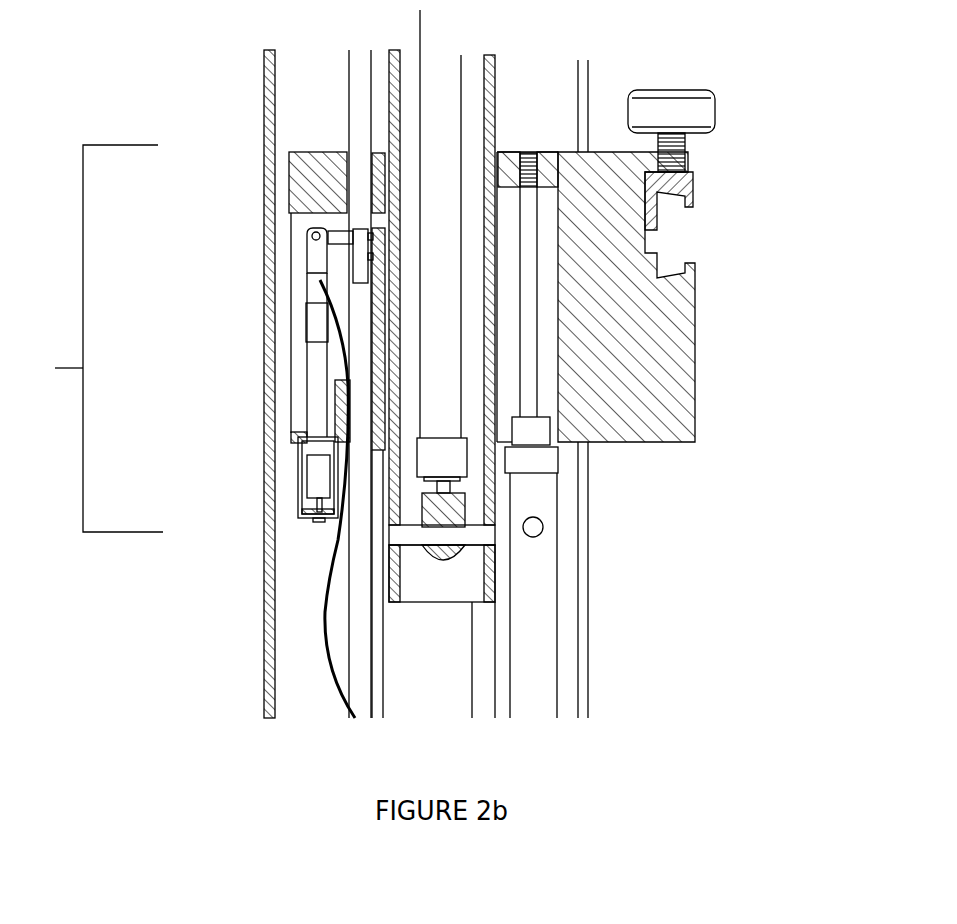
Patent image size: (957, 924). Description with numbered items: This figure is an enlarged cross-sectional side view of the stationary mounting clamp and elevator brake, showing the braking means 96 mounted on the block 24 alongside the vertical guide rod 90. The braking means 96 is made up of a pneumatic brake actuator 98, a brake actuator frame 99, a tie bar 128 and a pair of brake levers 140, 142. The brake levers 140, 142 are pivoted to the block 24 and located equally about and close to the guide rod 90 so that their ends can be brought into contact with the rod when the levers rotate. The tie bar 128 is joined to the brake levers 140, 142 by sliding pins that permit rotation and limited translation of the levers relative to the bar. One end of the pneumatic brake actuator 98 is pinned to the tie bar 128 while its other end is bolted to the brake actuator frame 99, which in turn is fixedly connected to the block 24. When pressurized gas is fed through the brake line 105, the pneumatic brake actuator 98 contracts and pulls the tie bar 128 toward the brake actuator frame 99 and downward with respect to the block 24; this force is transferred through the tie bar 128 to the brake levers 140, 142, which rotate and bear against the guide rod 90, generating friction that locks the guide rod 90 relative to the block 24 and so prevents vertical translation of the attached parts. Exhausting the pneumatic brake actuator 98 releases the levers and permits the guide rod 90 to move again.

The block 24 is at (700, 337).
The guide rod 90 is at (347, 125).
The braking means 96 is at (84, 338).
The pneumatic brake actuator 98 is at (307, 335).
The brake actuator frame 99 is at (298, 475).
The brake line 105 is at (325, 613).
The tie bar 128 is at (298, 212).
The brake lever 140 is at (350, 278).
The brake lever 142 is at (363, 256).